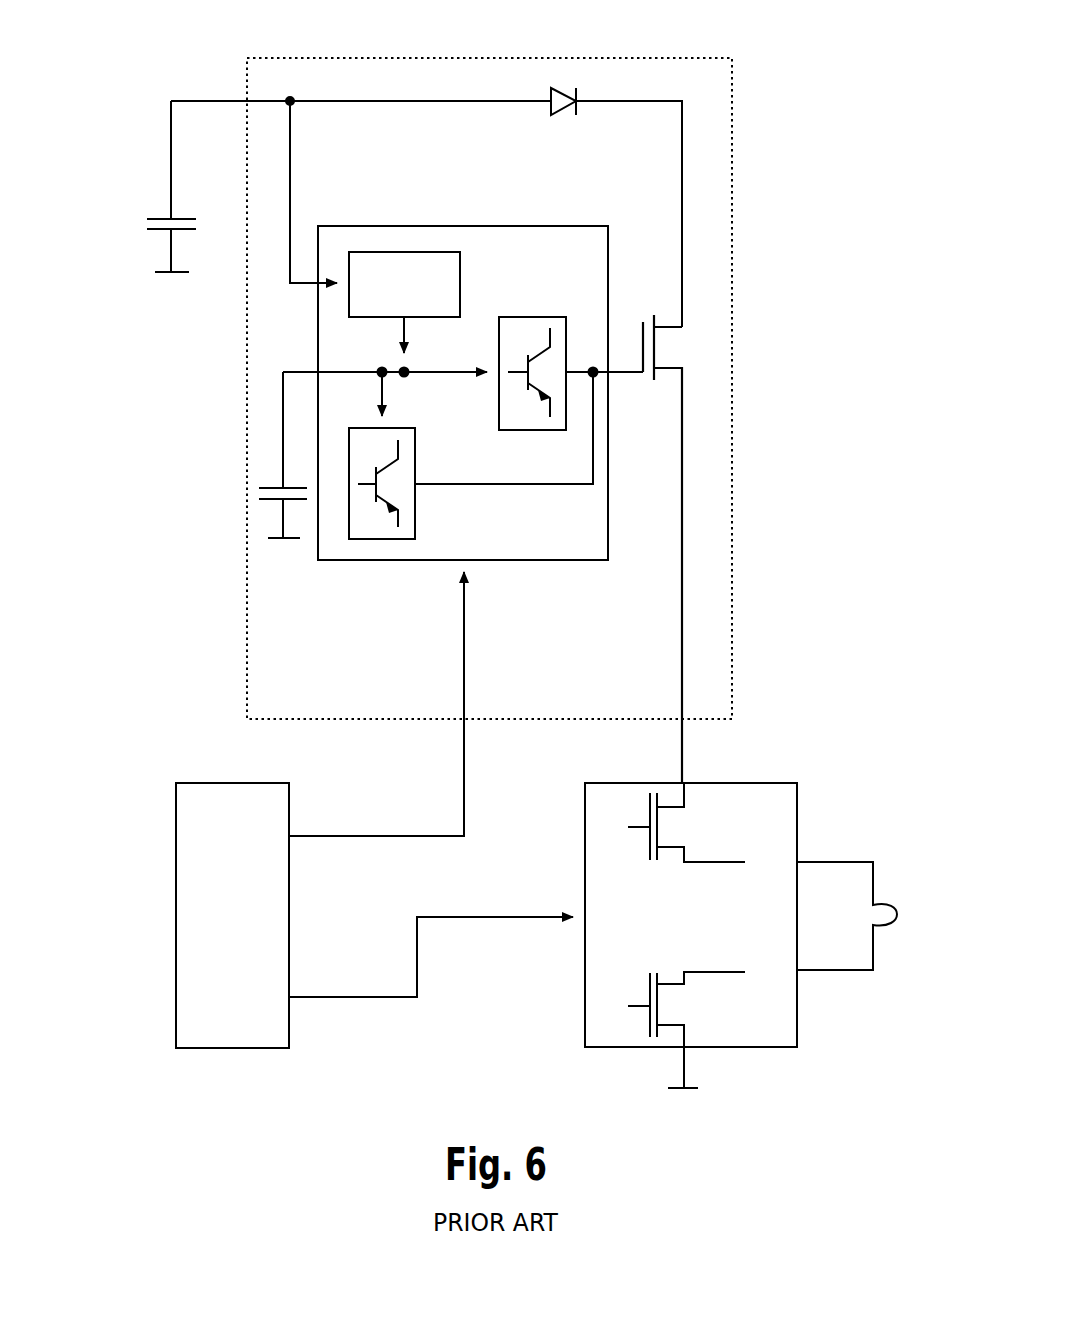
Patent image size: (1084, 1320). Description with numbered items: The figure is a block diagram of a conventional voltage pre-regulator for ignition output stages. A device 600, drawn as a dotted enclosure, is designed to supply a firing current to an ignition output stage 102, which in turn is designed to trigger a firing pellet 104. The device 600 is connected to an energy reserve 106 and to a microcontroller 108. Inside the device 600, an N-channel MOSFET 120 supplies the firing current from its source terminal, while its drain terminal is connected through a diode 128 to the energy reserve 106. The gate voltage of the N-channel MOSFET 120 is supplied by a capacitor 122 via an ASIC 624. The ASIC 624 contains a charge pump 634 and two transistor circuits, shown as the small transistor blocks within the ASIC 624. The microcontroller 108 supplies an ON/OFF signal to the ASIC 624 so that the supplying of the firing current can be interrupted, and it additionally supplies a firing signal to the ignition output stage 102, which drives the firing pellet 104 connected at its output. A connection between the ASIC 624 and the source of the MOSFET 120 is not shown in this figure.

The ignition output stage 102 is at (775, 815).
The firing pellet 104 is at (890, 925).
The energy reserve 106 is at (162, 218).
The microcontroller 108 is at (200, 822).
The N-channel MOSFET 120 is at (657, 346).
The capacitor 122 is at (272, 486).
The diode 128 is at (578, 98).
The device 600 is at (732, 101).
The ASIC 624 is at (535, 258).
The charge pump 634 is at (402, 267).